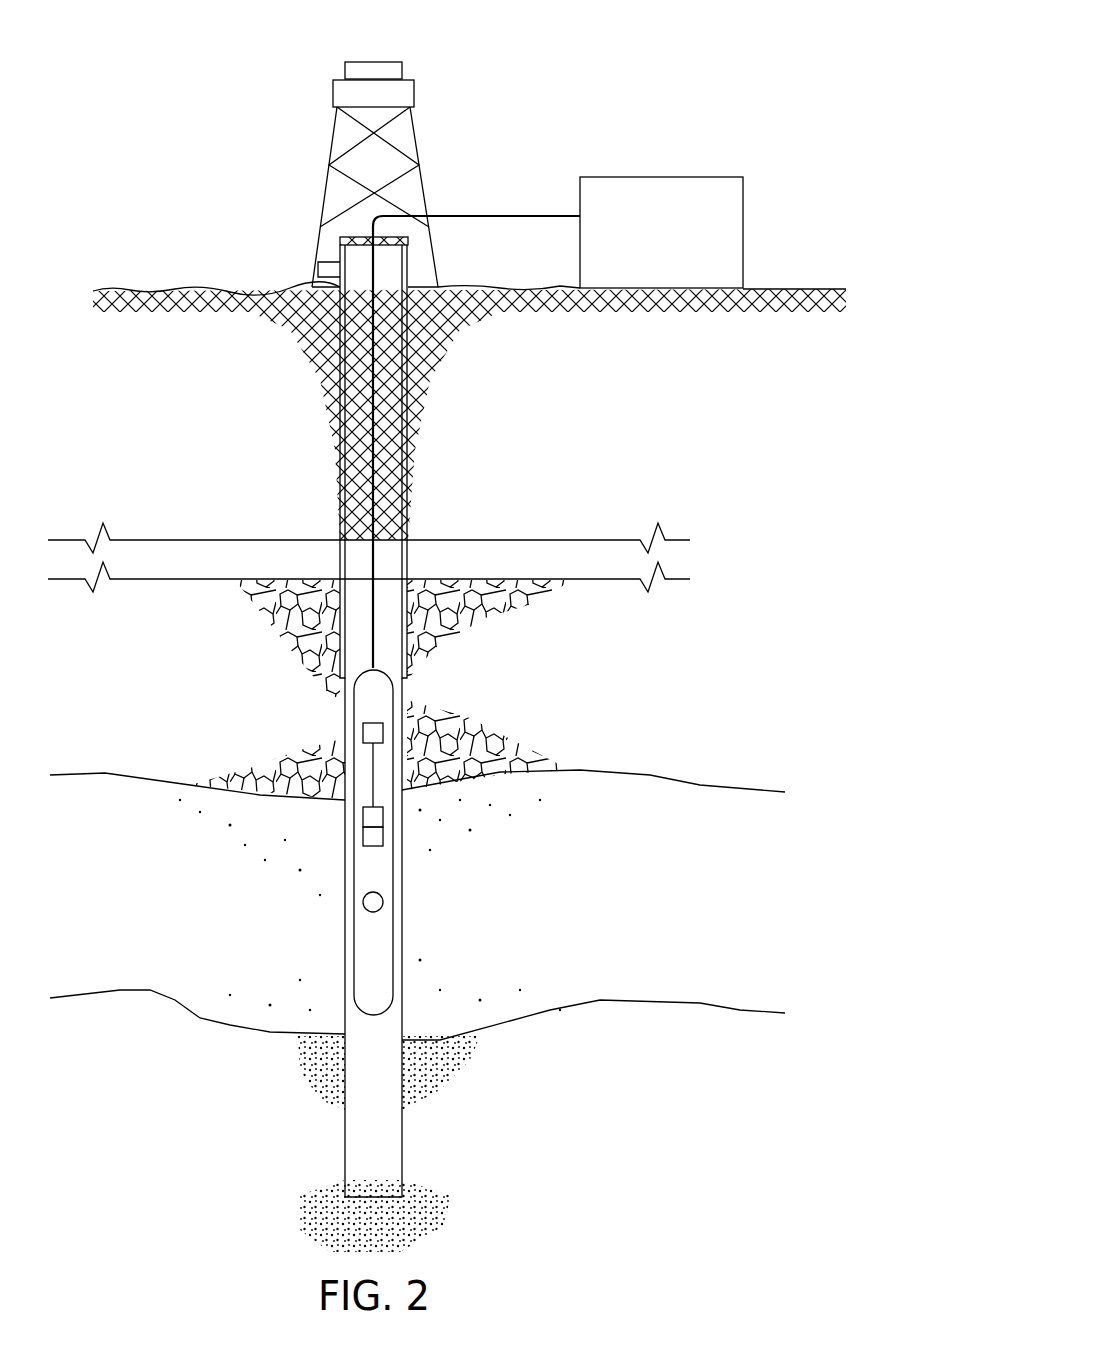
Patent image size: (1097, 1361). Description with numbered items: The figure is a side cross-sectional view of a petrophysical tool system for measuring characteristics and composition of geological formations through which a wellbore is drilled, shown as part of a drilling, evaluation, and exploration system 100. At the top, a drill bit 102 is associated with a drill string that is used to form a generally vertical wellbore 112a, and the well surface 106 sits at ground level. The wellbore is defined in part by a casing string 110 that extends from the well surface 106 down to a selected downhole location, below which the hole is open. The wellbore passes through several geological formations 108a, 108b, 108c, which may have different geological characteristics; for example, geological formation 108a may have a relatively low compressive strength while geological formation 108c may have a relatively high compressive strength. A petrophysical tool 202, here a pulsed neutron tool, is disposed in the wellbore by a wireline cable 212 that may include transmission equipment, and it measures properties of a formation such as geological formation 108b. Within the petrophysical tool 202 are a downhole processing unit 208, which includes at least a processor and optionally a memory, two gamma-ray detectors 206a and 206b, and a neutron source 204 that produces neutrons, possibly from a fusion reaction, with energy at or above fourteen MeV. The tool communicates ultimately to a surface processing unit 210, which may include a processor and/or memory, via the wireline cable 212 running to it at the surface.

The drilling, evaluation, and exploration system 100 is at (577, 69).
The drill bit 102 is at (262, 109).
The well surface 106 is at (418, 264).
The geological formation 108a is at (568, 693).
The geological formation 108b is at (580, 911).
The geological formation 108c is at (522, 1158).
The casing string 110 is at (340, 455).
The generally vertical wellbore 112a is at (245, 657).
The petrophysical tool 202 is at (354, 962).
The neutron source 204 is at (363, 902).
The gamma-ray detector 206a is at (383, 835).
The gamma-ray detector 206b is at (363, 817).
The downhole processing unit 208 is at (363, 733).
The surface processing unit 210 is at (660, 177).
The wireline cable 212 is at (373, 440).